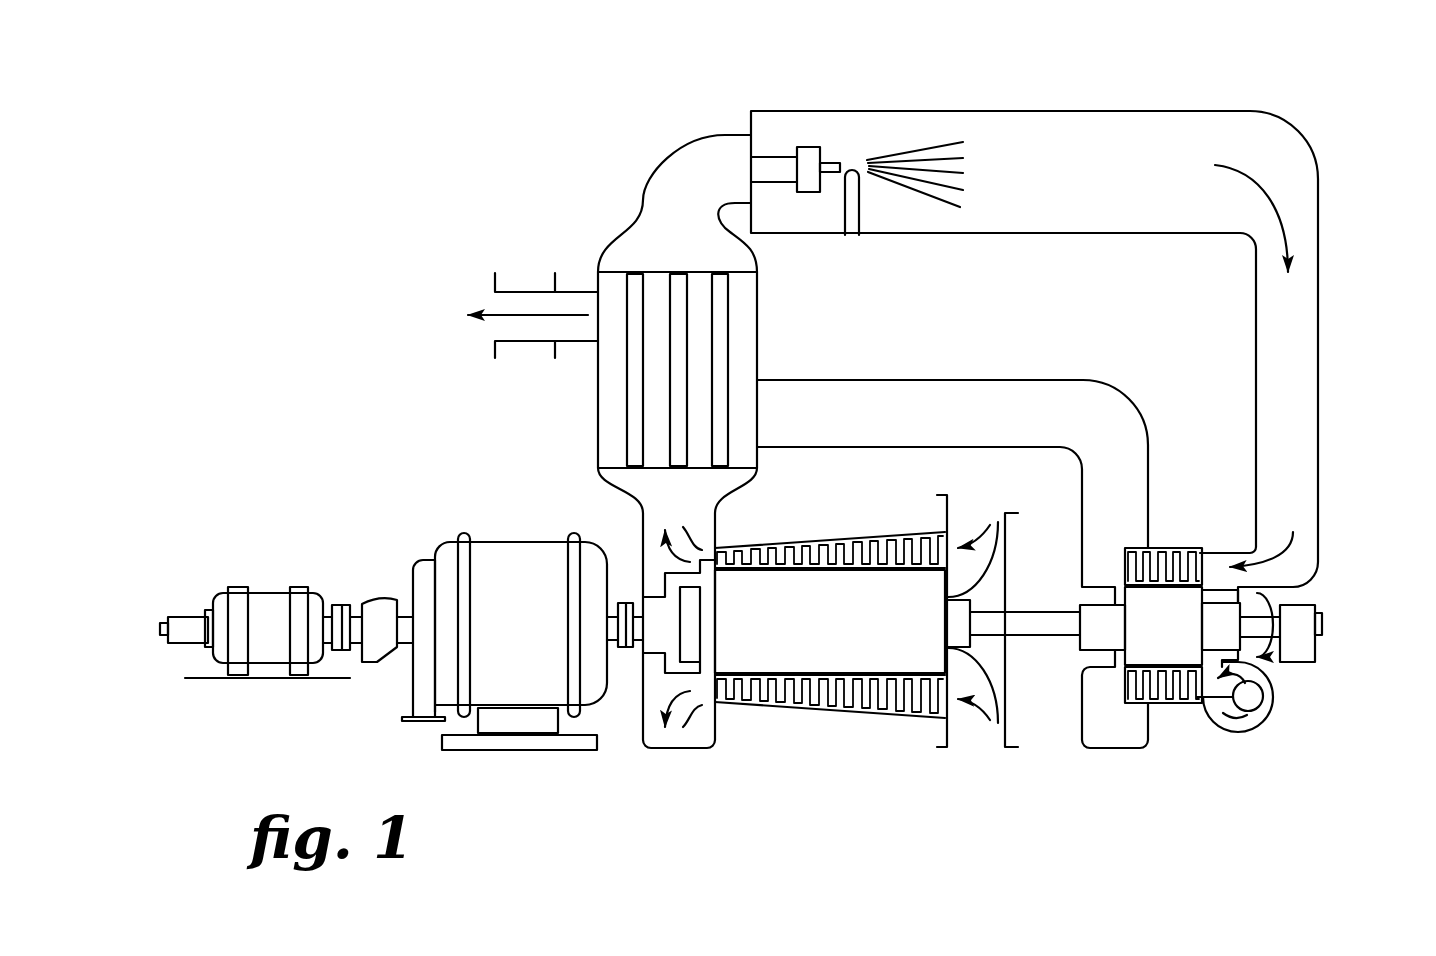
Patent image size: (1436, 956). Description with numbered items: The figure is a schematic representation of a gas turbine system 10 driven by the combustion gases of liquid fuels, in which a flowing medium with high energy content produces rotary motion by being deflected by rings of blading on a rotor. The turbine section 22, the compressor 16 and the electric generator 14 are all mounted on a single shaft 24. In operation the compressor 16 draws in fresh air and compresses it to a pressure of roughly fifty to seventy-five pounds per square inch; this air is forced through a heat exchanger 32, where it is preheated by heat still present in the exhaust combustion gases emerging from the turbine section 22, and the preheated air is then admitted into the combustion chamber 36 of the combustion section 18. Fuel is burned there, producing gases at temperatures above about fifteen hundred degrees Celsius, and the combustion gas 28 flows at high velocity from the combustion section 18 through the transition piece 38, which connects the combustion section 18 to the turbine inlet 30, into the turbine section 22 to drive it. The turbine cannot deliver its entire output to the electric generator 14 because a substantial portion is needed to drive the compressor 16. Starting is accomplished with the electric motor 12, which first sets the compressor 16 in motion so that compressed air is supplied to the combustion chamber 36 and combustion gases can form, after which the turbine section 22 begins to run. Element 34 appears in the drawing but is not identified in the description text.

The gas turbine system 10 is at (518, 178).
The electric motor 12 is at (267, 592).
The electric generator 14 is at (521, 541).
The compressor 16 is at (786, 718).
The combustion section 18 is at (884, 100).
The turbine section 22 is at (1173, 707).
The shaft 24 is at (1032, 608).
The combustion gas 28 is at (937, 155).
The turbine inlet 30 is at (1250, 658).
The heat exchanger 32 is at (768, 298).
The igniter 34 is at (858, 203).
The combustion chamber 36 is at (1066, 210).
The transition piece 38 is at (1322, 275).